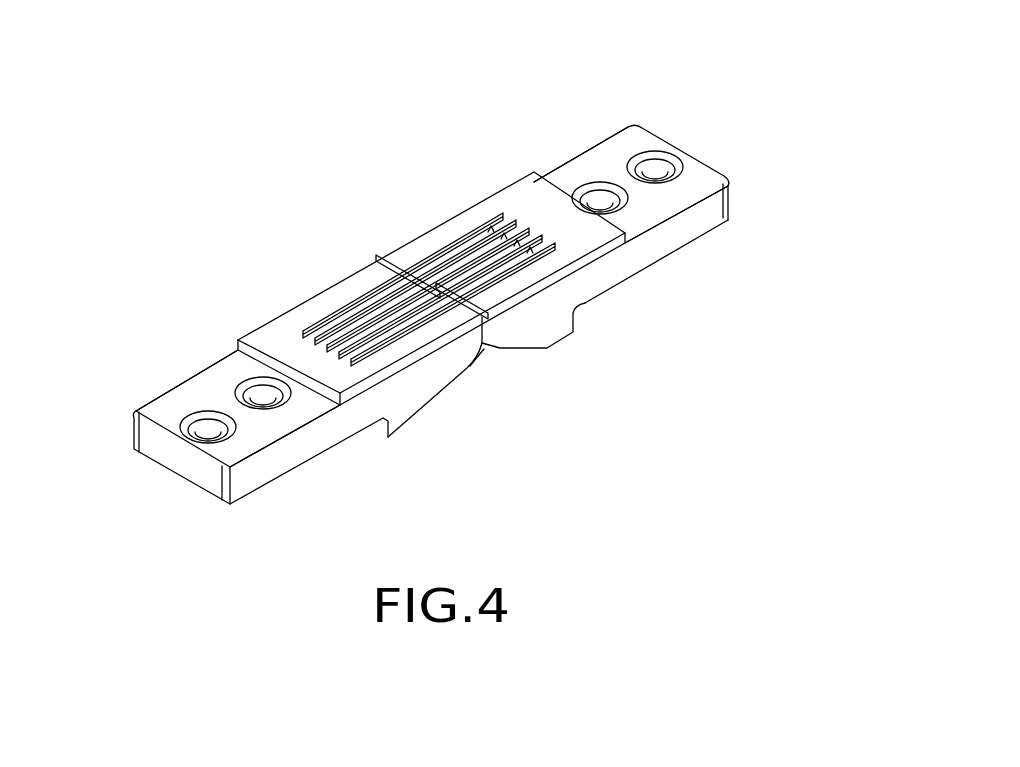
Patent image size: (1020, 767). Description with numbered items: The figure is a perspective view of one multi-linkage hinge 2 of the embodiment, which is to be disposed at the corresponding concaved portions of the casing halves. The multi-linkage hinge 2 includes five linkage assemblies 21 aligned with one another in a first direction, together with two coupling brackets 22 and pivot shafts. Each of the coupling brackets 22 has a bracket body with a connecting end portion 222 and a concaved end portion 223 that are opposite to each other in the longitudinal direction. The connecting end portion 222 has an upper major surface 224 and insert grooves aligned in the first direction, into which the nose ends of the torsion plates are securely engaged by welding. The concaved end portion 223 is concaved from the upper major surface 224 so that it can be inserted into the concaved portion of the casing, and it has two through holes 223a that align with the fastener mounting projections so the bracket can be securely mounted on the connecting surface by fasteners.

The multi-linkage hinge 2 is at (332, 216).
The linkage assemblies 21 is at (522, 210).
The coupling brackets 22 is at (205, 302).
The connecting end portion 222 is at (427, 387).
The concaved end portion 223 is at (696, 172).
The through holes 223a is at (596, 198).
The upper major surface 224 is at (447, 238).